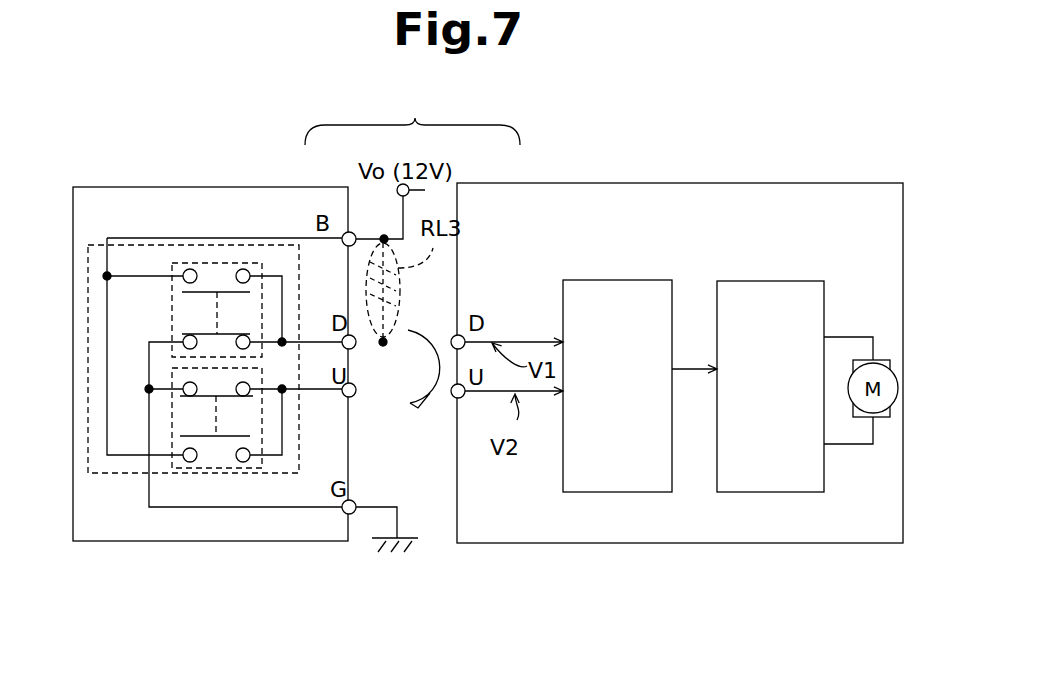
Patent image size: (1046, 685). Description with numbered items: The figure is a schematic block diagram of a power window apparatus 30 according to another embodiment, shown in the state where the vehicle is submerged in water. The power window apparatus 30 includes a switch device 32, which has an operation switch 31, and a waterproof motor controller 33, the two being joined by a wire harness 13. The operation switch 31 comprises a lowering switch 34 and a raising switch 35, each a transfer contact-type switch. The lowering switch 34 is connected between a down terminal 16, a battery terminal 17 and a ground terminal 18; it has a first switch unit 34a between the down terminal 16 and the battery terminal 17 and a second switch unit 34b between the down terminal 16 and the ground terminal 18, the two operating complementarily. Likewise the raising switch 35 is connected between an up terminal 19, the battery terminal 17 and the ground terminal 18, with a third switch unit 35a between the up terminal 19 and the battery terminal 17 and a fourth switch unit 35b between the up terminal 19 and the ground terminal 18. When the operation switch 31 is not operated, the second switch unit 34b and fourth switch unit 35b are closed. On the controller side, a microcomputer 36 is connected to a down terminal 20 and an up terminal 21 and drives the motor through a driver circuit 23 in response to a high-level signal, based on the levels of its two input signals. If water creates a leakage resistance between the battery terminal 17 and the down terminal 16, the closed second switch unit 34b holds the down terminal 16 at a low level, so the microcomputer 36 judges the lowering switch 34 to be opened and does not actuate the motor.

The wire harness 13 is at (418, 408).
The down terminal 16 is at (356, 348).
The battery terminal 17 is at (357, 238).
The ground terminal 18 is at (343, 513).
The up terminal 19 is at (355, 397).
The down terminal 20 is at (456, 337).
The up terminal 21 is at (456, 397).
The driver circuit 23 is at (810, 280).
The power window apparatus 30 is at (412, 114).
The operation switch 31 is at (117, 473).
The switch device 32 is at (302, 183).
The motor controller 33 is at (513, 183).
The lowering switch 34 is at (212, 276).
The first switch unit 34a is at (223, 268).
The second switch unit 34b is at (240, 308).
The raising switch 35 is at (206, 429).
The third switch unit 35a is at (223, 461).
The fourth switch unit 35b is at (224, 373).
The microcomputer 36 is at (563, 290).